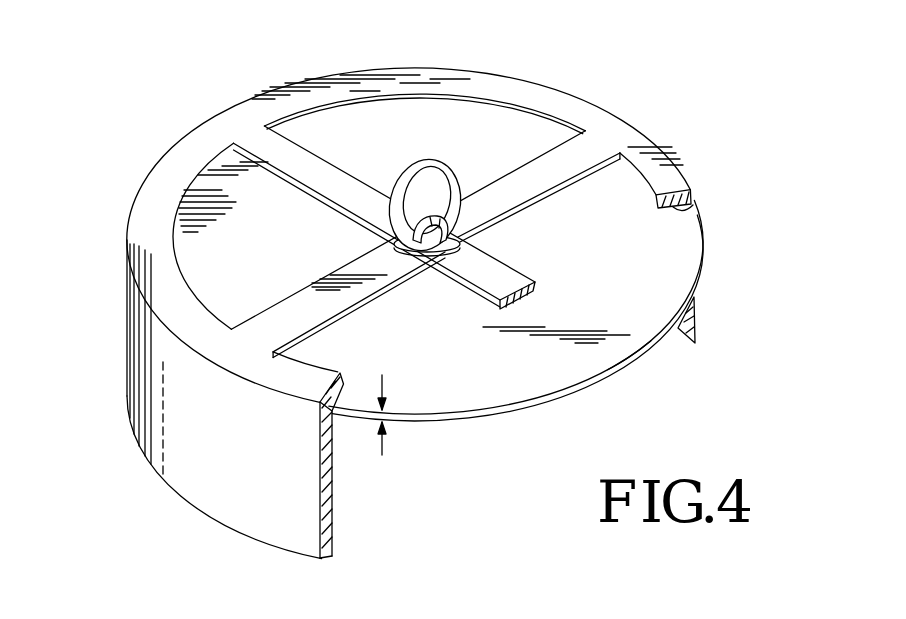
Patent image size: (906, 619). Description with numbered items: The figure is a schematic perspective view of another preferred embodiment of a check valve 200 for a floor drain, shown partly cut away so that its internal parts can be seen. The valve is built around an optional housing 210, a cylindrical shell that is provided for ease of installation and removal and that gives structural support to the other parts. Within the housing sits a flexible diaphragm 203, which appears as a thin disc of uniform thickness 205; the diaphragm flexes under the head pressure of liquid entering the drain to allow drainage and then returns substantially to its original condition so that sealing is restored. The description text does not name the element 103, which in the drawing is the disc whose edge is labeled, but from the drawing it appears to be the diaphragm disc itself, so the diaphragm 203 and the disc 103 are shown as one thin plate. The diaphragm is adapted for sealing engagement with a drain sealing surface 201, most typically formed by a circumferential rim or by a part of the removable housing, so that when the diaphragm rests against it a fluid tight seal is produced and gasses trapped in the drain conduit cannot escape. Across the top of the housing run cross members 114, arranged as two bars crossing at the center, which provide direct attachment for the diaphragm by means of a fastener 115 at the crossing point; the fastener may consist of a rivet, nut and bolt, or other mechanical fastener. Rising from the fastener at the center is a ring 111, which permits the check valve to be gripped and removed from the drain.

The check valve 200 is at (668, 88).
The drain sealing surface 201 is at (692, 204).
The diaphragm 203 is at (633, 357).
The thickness 205 is at (385, 429).
The housing 210 is at (228, 506).
The disc 103 is at (483, 393).
The ring 111 is at (440, 162).
The cross members 114 is at (335, 166).
The fastener 115 is at (473, 233).